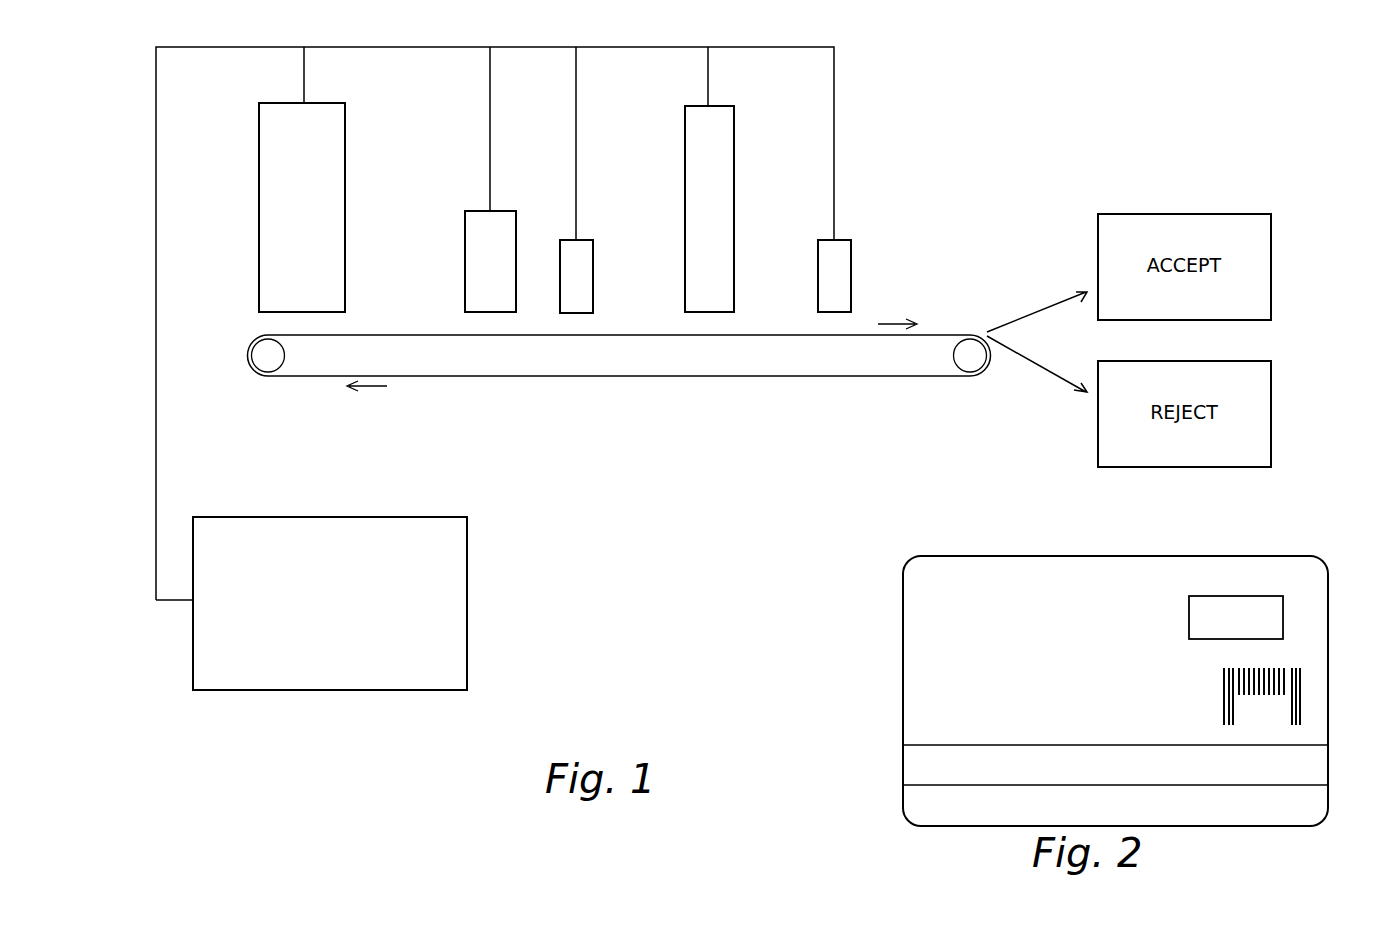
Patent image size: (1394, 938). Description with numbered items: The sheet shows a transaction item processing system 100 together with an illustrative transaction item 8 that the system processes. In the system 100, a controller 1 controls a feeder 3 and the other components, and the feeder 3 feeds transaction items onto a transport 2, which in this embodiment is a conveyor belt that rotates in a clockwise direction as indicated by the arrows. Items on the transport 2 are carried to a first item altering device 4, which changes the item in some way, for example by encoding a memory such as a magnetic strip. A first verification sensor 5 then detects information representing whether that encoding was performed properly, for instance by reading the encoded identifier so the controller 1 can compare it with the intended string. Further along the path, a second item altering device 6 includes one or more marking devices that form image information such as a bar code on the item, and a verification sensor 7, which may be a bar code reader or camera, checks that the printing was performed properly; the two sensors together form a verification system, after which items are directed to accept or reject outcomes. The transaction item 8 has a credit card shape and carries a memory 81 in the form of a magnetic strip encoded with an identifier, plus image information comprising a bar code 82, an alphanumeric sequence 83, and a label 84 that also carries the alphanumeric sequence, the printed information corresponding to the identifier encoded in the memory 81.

In FIG. 1, the transaction item processing system 100 is at (120, 102).
In FIG. 1, the controller 1 is at (467, 589).
In FIG. 1, the transport 2 is at (302, 377).
In FIG. 1, the feeder 3 is at (259, 222).
In FIG. 1, the first item altering device 4 is at (465, 225).
In FIG. 1, the first verification sensor 5 is at (596, 250).
In FIG. 1, the second item altering device 6 is at (735, 165).
In FIG. 1, the verification sensor 7 is at (852, 249).
In FIG. 2, the transaction item 8 is at (879, 588).
In FIG. 2, the memory 81 is at (910, 758).
In FIG. 2, the bar code 82 is at (1302, 690).
In FIG. 2, the alphanumeric sequence 83 is at (977, 600).
In FIG. 2, the label 84 is at (1276, 622).